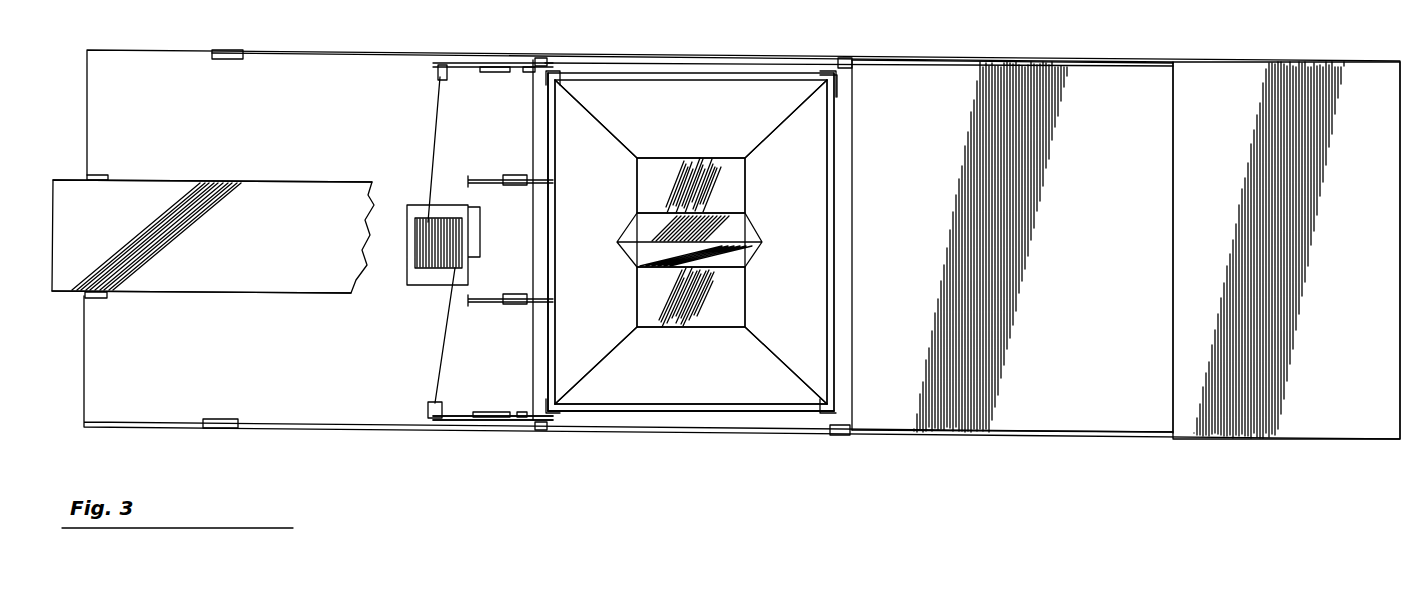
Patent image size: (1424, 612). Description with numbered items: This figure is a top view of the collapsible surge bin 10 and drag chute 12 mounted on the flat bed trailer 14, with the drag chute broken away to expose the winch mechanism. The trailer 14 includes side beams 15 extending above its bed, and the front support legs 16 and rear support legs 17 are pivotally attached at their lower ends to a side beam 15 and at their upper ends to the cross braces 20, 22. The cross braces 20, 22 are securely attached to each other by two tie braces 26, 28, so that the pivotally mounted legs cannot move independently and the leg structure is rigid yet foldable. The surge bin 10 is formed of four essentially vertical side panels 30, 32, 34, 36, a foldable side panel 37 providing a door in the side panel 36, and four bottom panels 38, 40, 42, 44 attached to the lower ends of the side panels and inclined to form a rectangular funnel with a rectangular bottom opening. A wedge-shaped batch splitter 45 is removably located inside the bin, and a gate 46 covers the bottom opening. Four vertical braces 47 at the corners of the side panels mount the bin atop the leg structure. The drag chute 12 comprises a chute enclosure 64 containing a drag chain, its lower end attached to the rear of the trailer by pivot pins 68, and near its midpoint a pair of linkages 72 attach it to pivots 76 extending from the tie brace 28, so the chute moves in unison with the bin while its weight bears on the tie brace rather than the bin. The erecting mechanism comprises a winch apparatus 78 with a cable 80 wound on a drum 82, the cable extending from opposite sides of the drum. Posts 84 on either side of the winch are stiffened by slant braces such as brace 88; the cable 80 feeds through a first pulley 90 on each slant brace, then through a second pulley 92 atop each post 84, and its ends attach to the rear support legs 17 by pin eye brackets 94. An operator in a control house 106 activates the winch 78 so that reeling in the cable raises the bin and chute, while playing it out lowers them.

The surge bin 10 is at (866, 458).
The drag chute 12 is at (195, 178).
The flat bed trailer 14 is at (1116, 413).
The side beams 15 is at (1077, 62).
The front support legs 16 is at (852, 60).
The rear support legs 17 is at (543, 58).
The cross brace 20 is at (758, 414).
The cross brace 22 is at (637, 72).
The tie brace 26 is at (842, 143).
The tie brace 28 is at (540, 233).
The side panel 30 is at (609, 411).
The side panel 32 is at (735, 77).
The side panel 34 is at (830, 265).
The side panel 36 is at (552, 102).
The foldable side panel 37 is at (567, 287).
The bottom panel 38 is at (652, 392).
The bottom panel 40 is at (790, 90).
The bottom panel 42 is at (810, 188).
The bottom panel 44 is at (567, 127).
The batch splitter 45 is at (747, 248).
The gate 46 is at (737, 185).
The vertical braces 47 is at (575, 58).
The chute enclosure 64 is at (62, 178).
The pivot pins 68 is at (102, 175).
The linkages 72 is at (477, 172).
The pivots 76 is at (516, 185).
The winch apparatus 78 is at (391, 275).
The cable 80 is at (436, 150).
The drum 82 is at (407, 226).
The posts 84 is at (490, 62).
The slant brace 88 is at (297, 50).
The pulley 90 is at (437, 78).
The second pulley 92 is at (495, 72).
The pin eye brackets 94 is at (527, 62).
The control house 106 is at (1358, 61).